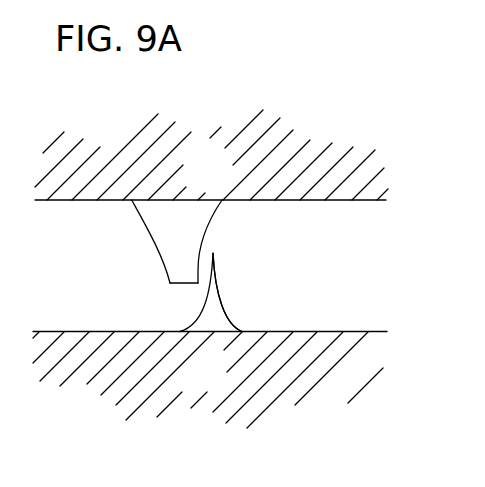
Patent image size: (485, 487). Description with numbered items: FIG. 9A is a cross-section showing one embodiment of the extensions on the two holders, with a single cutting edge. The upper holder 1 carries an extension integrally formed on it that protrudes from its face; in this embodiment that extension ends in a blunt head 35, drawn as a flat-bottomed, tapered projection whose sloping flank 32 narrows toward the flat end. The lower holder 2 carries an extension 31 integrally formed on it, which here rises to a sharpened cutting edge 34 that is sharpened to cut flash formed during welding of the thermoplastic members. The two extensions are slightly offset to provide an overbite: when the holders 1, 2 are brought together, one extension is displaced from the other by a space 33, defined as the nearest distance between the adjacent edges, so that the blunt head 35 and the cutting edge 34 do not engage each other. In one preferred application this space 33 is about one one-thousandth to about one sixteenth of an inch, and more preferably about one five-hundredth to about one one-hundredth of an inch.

The holder 1 is at (212, 188).
The holder 2 is at (213, 388).
The extension 31 is at (220, 302).
The tapered side wall of opening 32 is at (147, 227).
The space 33 is at (226, 243).
The cutting edge 34 is at (220, 277).
The blunt head 35 is at (173, 287).